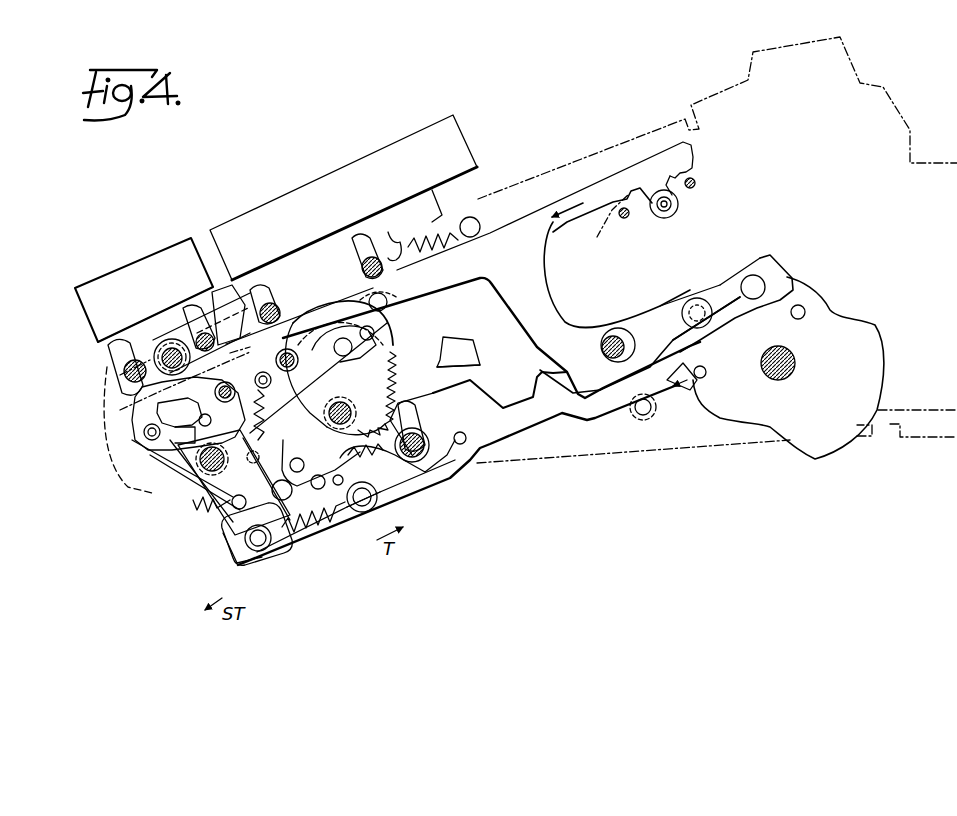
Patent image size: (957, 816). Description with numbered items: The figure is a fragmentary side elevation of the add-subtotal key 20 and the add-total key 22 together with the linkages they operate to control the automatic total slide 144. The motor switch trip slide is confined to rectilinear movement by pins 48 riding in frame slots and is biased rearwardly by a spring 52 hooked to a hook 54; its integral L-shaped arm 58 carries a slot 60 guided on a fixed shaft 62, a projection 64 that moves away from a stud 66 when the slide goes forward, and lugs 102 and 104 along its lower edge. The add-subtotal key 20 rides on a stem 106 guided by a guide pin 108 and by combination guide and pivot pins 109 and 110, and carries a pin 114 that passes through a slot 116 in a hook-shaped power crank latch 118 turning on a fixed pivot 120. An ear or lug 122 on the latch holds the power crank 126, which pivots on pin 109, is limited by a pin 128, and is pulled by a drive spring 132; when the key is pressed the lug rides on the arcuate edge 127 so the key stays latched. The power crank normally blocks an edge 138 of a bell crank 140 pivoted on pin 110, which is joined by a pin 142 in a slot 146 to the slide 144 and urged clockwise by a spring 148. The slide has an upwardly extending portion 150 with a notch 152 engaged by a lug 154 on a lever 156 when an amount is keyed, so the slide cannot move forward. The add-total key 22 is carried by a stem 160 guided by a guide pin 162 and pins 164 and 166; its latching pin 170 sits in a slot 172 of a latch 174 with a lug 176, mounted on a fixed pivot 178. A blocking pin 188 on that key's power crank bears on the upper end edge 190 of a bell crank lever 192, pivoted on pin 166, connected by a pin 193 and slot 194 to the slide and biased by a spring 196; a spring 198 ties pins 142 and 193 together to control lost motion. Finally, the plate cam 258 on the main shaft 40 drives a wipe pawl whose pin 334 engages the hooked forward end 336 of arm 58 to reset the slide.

The add-subtotal key 20 is at (130, 268).
The add-total key 22 is at (336, 176).
The main shaft 40 is at (787, 382).
The pins 48 is at (680, 207).
The spring 52 is at (443, 212).
The hook 54 is at (401, 238).
The L-shaped arm 58 is at (546, 280).
The slot 60 is at (638, 332).
The fixed shaft 62 is at (610, 337).
The projection 64 is at (700, 400).
The stud 66 is at (707, 375).
The lug 102 is at (597, 225).
The lug 104 is at (700, 180).
The stem 106 is at (140, 326).
The guide pin 108 is at (172, 362).
The guide and pivot pin 109 is at (227, 303).
The guide and pivot pin 110 is at (195, 470).
The pin 114 is at (196, 412).
The slot 116 is at (581, 193).
The power crank latch 118 is at (135, 410).
The fixed pivot 120 is at (144, 432).
The ear or lug 122 is at (150, 470).
The power crank 126 is at (147, 352).
The arcuate edge 127 is at (160, 500).
The pin 128 is at (188, 338).
The drive spring 132 is at (310, 385).
The edge 138 is at (117, 460).
The bell crank 140 is at (227, 520).
The pin 142 is at (258, 548).
The automatic total slide 144 is at (452, 480).
The slot 146 is at (247, 550).
The spring 148 is at (193, 508).
The upwardly extending portion 150 is at (470, 384).
The notch 152 is at (420, 410).
The lug 154 is at (440, 340).
The lever 156 is at (481, 355).
The stem 160 is at (326, 250).
The guide pin 162 is at (365, 245).
The guide and pivot pin 164 is at (262, 297).
The guide and pivot pin 166 is at (310, 407).
The latching pin 170 is at (292, 345).
The slot 172 is at (287, 350).
The latch 174 is at (305, 330).
The lug 176 is at (388, 369).
The fixed pivot 178 is at (380, 323).
The blocking pin 188 is at (376, 346).
The upper end edge 190 is at (386, 298).
The bell crank lever 192 is at (290, 457).
The pin 193 is at (360, 510).
The slot 194 is at (374, 506).
The spring 196 is at (365, 476).
The spring 198 is at (313, 527).
The plate cam 258 is at (863, 357).
The pin 334 is at (748, 280).
The hooked forward end 336 is at (777, 272).